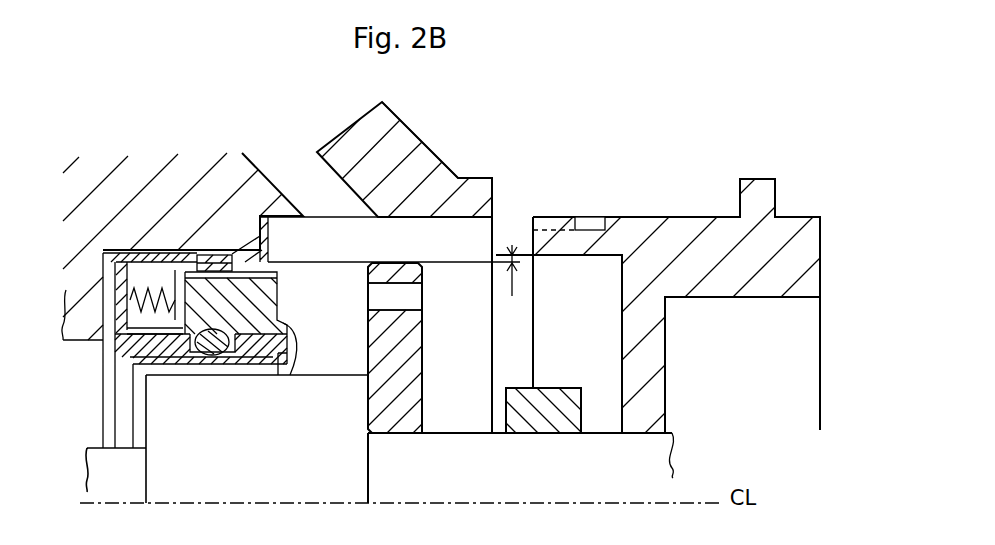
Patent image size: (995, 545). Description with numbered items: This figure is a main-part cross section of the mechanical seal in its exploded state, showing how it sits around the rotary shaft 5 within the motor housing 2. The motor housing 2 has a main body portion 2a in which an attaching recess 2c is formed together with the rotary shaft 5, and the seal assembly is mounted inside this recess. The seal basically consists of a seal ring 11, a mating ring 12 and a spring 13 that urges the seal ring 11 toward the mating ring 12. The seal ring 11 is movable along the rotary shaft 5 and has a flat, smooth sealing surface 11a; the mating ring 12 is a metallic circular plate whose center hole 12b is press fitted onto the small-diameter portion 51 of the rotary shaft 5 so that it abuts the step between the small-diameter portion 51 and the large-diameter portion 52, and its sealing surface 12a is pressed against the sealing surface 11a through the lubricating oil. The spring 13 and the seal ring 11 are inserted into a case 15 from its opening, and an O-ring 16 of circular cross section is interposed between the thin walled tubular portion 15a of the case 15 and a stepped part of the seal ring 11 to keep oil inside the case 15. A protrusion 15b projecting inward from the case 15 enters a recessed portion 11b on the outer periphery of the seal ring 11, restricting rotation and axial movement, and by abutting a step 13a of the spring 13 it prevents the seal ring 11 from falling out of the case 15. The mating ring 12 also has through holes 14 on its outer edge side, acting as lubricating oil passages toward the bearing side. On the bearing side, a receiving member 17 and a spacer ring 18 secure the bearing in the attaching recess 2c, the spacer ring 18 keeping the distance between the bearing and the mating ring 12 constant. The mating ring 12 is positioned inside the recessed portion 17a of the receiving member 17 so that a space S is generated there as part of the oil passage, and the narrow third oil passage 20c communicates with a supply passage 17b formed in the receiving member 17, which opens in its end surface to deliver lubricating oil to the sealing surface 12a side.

The motor housing 2 is at (427, 157).
The main body portion 2a is at (393, 152).
The attaching recess 2c is at (418, 245).
The third oil passage 20c is at (322, 184).
The rotary shaft 5 is at (673, 450).
The seal ring 11 is at (263, 327).
The sealing surface 11a is at (297, 345).
The recessed portion 11b is at (262, 272).
The mating ring 12 is at (390, 398).
The sealing surface 12a is at (365, 328).
The center hole 12b is at (383, 435).
The spring 13 is at (127, 290).
The step 13a is at (180, 277).
The through hole 14 is at (395, 308).
The case 15 is at (132, 353).
The thin walled tubular portion 15a is at (227, 362).
The protrusion 15b is at (213, 265).
The O-ring 16 is at (203, 347).
The receiving member 17 is at (655, 233).
The recessed portion 17a is at (562, 282).
The supply passage 17b is at (585, 227).
The spacer ring 18 is at (522, 422).
The small-diameter portion 51 is at (468, 445).
The large-diameter portion 52 is at (328, 410).
The space S is at (512, 245).